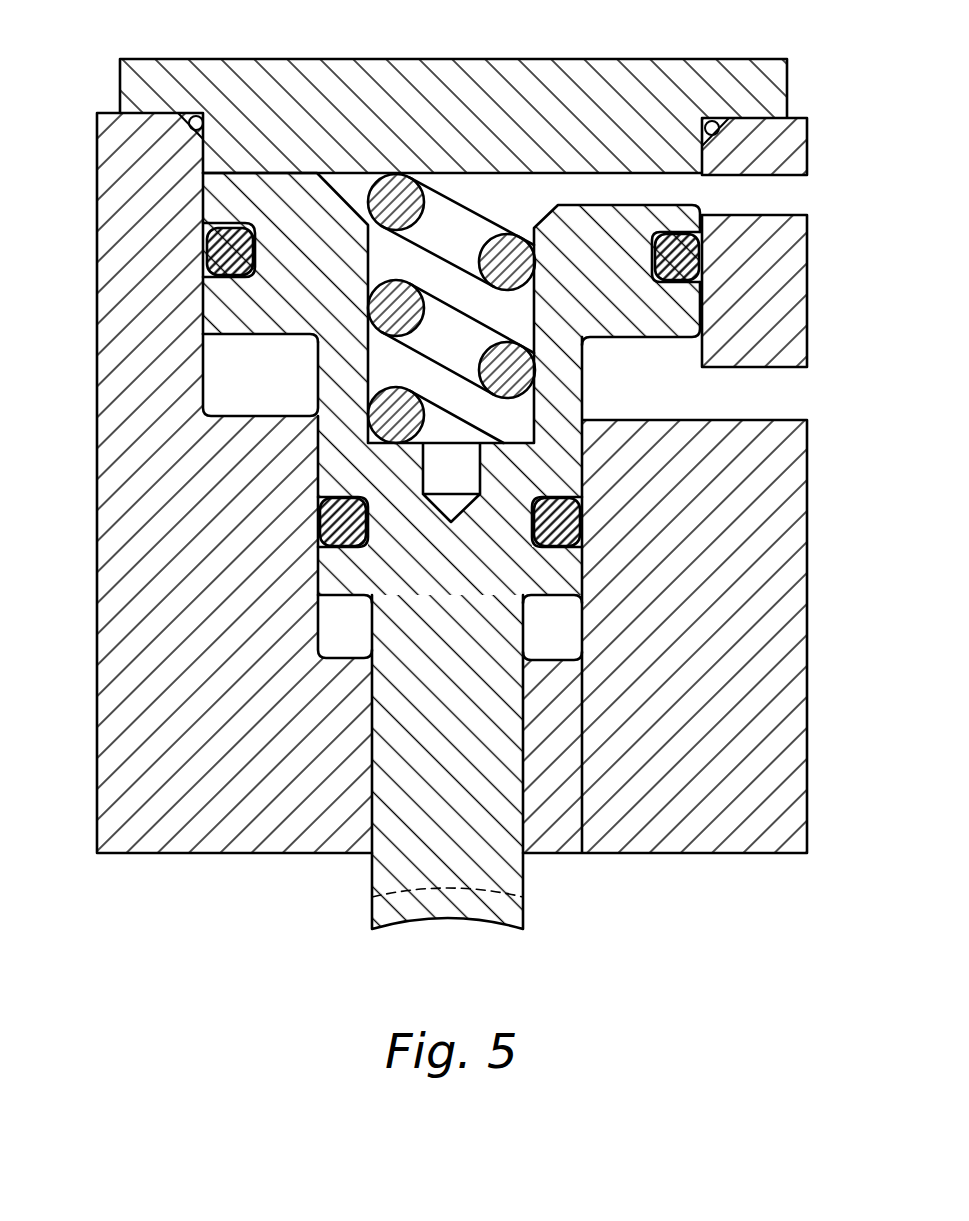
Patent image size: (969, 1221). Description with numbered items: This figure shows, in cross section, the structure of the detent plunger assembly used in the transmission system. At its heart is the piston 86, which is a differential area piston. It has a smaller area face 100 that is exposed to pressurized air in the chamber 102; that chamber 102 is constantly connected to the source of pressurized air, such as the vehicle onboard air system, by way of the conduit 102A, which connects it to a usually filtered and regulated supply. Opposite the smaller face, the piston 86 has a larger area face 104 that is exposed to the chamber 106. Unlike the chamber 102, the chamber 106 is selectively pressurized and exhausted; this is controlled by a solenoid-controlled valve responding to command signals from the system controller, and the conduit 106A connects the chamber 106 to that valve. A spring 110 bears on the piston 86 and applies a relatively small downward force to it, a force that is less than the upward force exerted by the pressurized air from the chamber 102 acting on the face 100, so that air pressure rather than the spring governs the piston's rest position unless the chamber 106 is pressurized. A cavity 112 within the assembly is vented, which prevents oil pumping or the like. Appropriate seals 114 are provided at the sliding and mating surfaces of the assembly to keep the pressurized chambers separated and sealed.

The piston 86 is at (560, 448).
The smaller area face 100 is at (262, 334).
The chamber 102 is at (277, 383).
The conduit 102A is at (758, 420).
The larger area face 104 is at (638, 205).
The chamber 106 is at (518, 200).
The conduit 106A is at (746, 215).
The spring 110 is at (445, 223).
The cavity 112 is at (560, 628).
The seals 114 is at (200, 118).